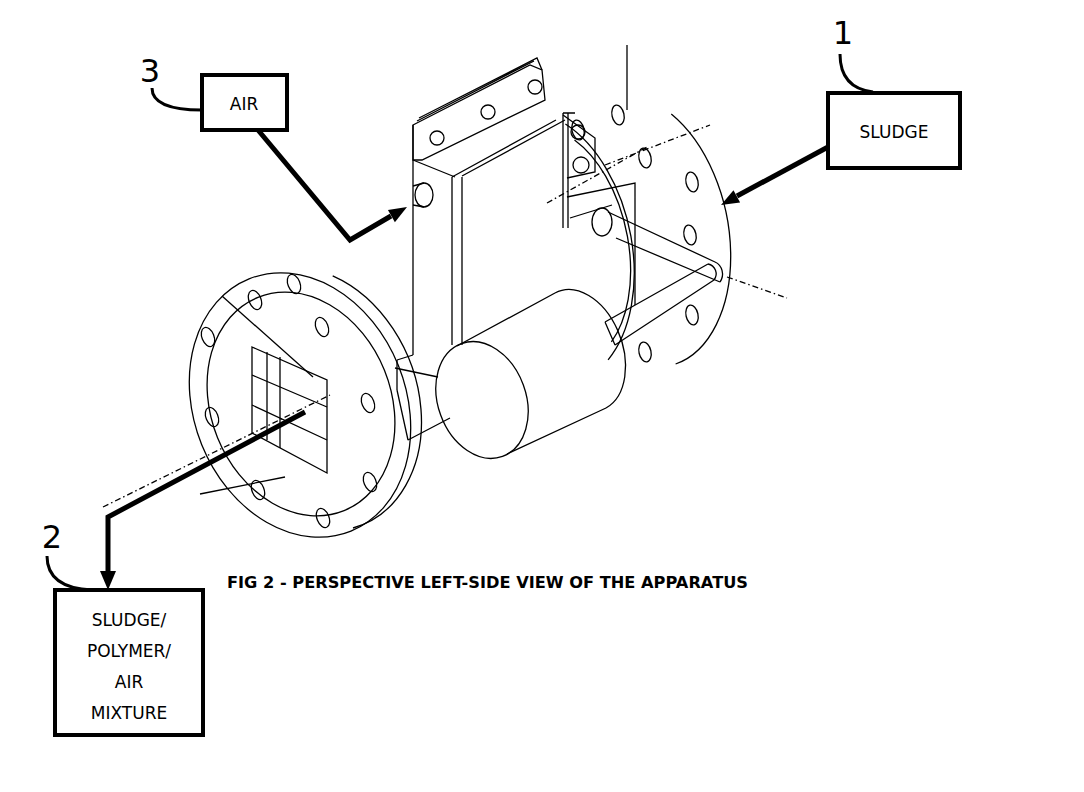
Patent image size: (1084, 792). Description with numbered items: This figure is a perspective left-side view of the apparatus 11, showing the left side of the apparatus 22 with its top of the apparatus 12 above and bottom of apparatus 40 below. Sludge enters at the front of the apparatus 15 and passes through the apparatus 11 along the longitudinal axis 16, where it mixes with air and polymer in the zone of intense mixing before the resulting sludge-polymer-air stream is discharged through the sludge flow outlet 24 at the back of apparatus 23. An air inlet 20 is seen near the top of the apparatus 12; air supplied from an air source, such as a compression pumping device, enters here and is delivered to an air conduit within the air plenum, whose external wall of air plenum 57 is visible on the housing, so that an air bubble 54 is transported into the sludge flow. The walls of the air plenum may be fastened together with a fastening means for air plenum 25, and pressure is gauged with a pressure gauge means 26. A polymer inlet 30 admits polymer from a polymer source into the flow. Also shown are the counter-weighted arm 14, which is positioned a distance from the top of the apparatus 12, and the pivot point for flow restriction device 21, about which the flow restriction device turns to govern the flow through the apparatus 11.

The apparatus 11 is at (630, 112).
The top of the apparatus 12 is at (478, 138).
The counter-weighted arm 14 is at (555, 412).
The front of the apparatus 15 is at (722, 225).
The longitudinal axis 16 is at (160, 480).
The air inlet 20 is at (412, 188).
The pivot point for flow restriction device 21 is at (700, 355).
The left side of the apparatus 22 is at (628, 160).
The back of apparatus 23 is at (240, 486).
The sludge flow outlet 24 is at (290, 380).
The fastening means for air plenum 25 is at (413, 125).
The pressure gauge means 26 is at (296, 278).
The polymer inlet 30 is at (700, 172).
The bottom of apparatus 40 is at (428, 433).
The air bubble 54 is at (222, 296).
The external wall of air plenum 57 is at (413, 263).